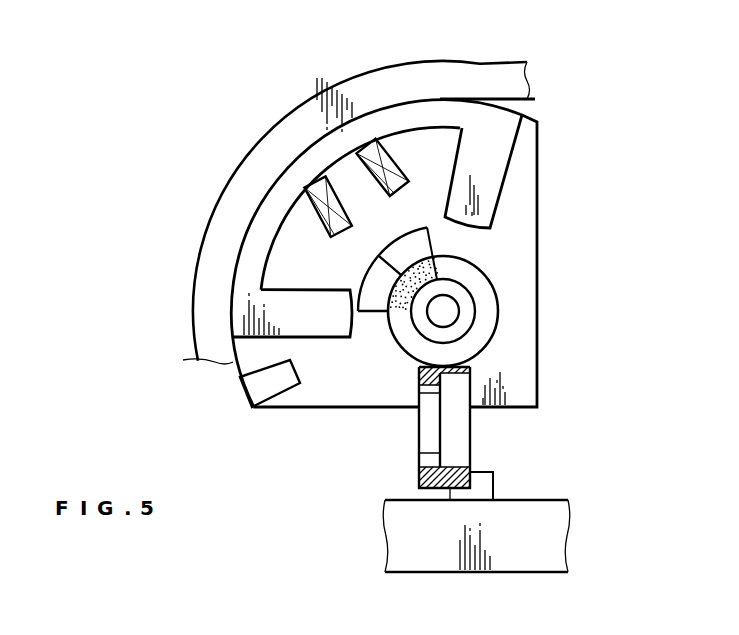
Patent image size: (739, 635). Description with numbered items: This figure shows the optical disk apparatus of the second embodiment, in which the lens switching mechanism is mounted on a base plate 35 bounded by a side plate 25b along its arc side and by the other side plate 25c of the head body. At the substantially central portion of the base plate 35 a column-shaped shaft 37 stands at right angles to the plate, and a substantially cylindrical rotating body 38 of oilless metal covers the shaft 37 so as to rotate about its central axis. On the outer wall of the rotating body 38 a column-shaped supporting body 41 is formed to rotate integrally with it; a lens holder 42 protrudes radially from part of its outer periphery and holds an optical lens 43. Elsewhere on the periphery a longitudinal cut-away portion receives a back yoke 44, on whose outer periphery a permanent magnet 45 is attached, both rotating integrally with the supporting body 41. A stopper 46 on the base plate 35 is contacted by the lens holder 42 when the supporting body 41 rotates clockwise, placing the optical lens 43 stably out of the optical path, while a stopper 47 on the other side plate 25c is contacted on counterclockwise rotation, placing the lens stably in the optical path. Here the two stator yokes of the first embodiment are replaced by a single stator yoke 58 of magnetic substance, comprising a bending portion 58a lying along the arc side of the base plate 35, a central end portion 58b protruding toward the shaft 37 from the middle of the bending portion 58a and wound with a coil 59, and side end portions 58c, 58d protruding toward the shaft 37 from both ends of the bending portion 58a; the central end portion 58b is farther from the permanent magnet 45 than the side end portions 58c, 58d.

The side plate 25b is at (367, 82).
The other side plate 25c is at (403, 528).
The base plate 35 is at (513, 252).
The shaft 37 is at (450, 310).
The rotating body 38 is at (460, 328).
The supporting body 41 is at (480, 290).
The lens holder 42 is at (420, 468).
The optical lens 43 is at (455, 440).
The back yoke 44 is at (437, 266).
The permanent magnet 45 is at (373, 315).
The stopper 46 is at (279, 380).
The stopper 47 is at (478, 488).
The stator yoke 58 is at (396, 241).
The bending portion 58a is at (280, 202).
The central end portion 58b is at (347, 214).
The side end portion 58c is at (483, 200).
The side end portion 58d is at (338, 322).
The coil 59 is at (402, 177).